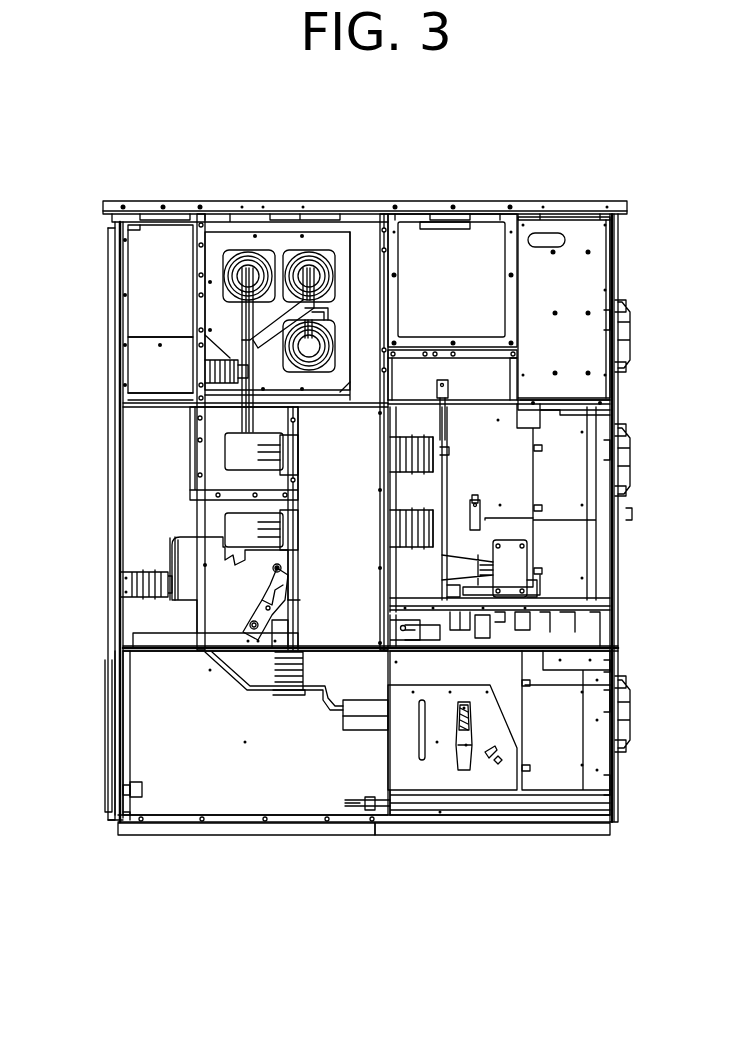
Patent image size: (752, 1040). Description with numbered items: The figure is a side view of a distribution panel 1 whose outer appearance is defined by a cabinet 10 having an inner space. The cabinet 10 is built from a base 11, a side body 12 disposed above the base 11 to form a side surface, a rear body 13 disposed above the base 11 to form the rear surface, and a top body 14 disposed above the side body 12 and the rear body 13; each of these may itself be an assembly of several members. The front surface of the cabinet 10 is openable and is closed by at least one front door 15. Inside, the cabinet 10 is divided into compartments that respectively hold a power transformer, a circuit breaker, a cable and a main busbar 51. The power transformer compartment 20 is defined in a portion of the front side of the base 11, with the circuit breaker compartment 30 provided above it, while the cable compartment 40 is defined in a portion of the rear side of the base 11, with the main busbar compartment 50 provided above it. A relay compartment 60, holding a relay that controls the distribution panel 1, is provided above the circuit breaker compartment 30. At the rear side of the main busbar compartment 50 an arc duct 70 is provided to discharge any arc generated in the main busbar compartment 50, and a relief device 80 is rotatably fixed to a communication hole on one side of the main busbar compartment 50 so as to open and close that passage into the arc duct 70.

The distribution panel 1 is at (566, 118).
The cabinet 10 is at (588, 190).
The base 11 is at (533, 828).
The side body 12 is at (227, 797).
The rear body 13 is at (122, 758).
The top body 14 is at (468, 206).
The front door 15 is at (630, 342).
The power transformer compartment 20 is at (506, 686).
The circuit breaker compartment 30 is at (500, 446).
The cable compartment 40 is at (177, 714).
The main busbar compartment 50 is at (366, 250).
The main busbar 51 is at (287, 255).
The relay compartment 60 is at (585, 339).
The arc duct 70 is at (153, 293).
The relief device 80 is at (190, 282).